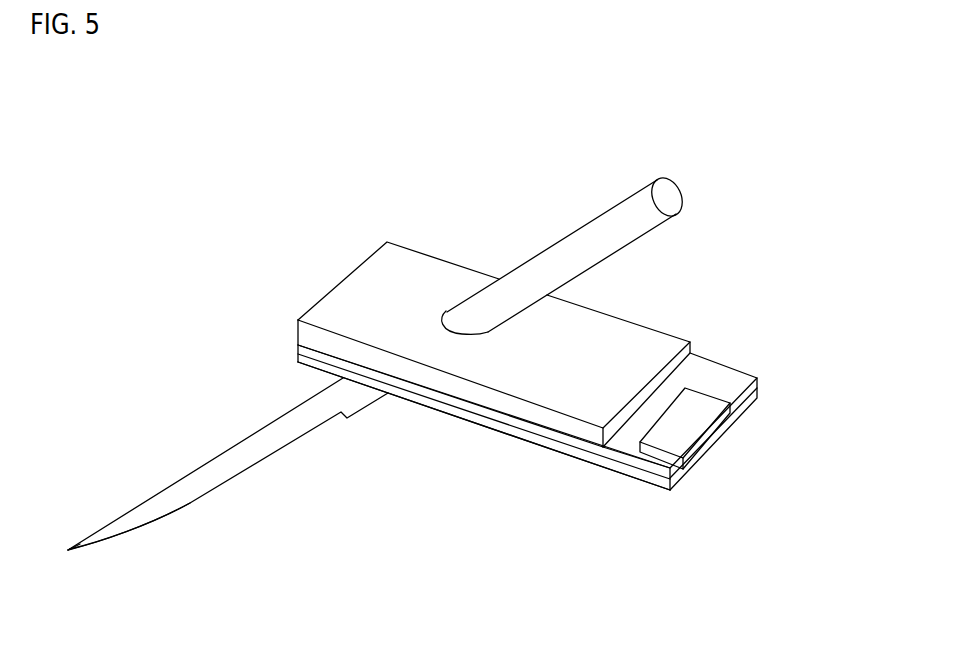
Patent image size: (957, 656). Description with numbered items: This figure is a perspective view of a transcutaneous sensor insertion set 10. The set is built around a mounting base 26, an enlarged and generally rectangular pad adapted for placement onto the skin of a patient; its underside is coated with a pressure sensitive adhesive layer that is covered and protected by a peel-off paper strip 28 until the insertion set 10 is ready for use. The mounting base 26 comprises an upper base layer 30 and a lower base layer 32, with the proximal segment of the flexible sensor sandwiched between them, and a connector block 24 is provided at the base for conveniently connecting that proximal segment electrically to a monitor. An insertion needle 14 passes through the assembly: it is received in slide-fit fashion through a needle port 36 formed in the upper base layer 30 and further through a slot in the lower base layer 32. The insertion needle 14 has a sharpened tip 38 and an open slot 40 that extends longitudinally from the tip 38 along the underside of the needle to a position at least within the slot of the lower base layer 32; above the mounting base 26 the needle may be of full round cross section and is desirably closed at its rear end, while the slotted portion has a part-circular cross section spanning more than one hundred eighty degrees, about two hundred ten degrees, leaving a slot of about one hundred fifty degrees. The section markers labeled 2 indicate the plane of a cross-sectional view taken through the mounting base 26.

The insertion set 10 is at (212, 363).
The insertion needle 14 is at (643, 235).
The section line of FIG. 2 is at (316, 266).
The connector block 24 is at (708, 400).
The mounting base 26 is at (665, 347).
The peel-off paper strip 28 is at (657, 489).
The upper base layer 30 is at (386, 257).
The lower base layer 32 is at (297, 363).
The needle port 36 is at (485, 332).
The sharpened tip 38 is at (68, 548).
The open slot 40 is at (190, 503).